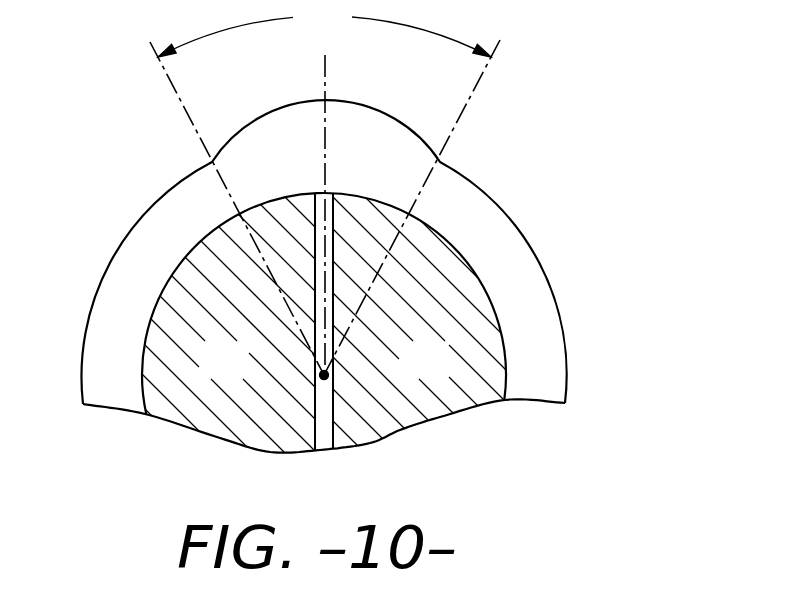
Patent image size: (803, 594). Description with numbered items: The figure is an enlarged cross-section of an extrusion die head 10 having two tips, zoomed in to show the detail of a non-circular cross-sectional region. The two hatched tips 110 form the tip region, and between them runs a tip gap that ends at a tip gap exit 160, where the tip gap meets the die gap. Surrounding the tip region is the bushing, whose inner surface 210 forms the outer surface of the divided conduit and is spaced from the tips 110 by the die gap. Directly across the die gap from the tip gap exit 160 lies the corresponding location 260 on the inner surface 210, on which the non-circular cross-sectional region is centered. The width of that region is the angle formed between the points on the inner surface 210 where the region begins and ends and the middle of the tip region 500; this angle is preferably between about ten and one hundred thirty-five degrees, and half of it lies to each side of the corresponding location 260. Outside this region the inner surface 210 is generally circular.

The extrusion die head 10 is at (361, 246).
The tips 110 is at (246, 374).
The tip gap exit 160 is at (327, 197).
The inner surface of the bushing 210 is at (150, 208).
The corresponding location 260 is at (327, 100).
The middle of the tip region 500 is at (332, 376).